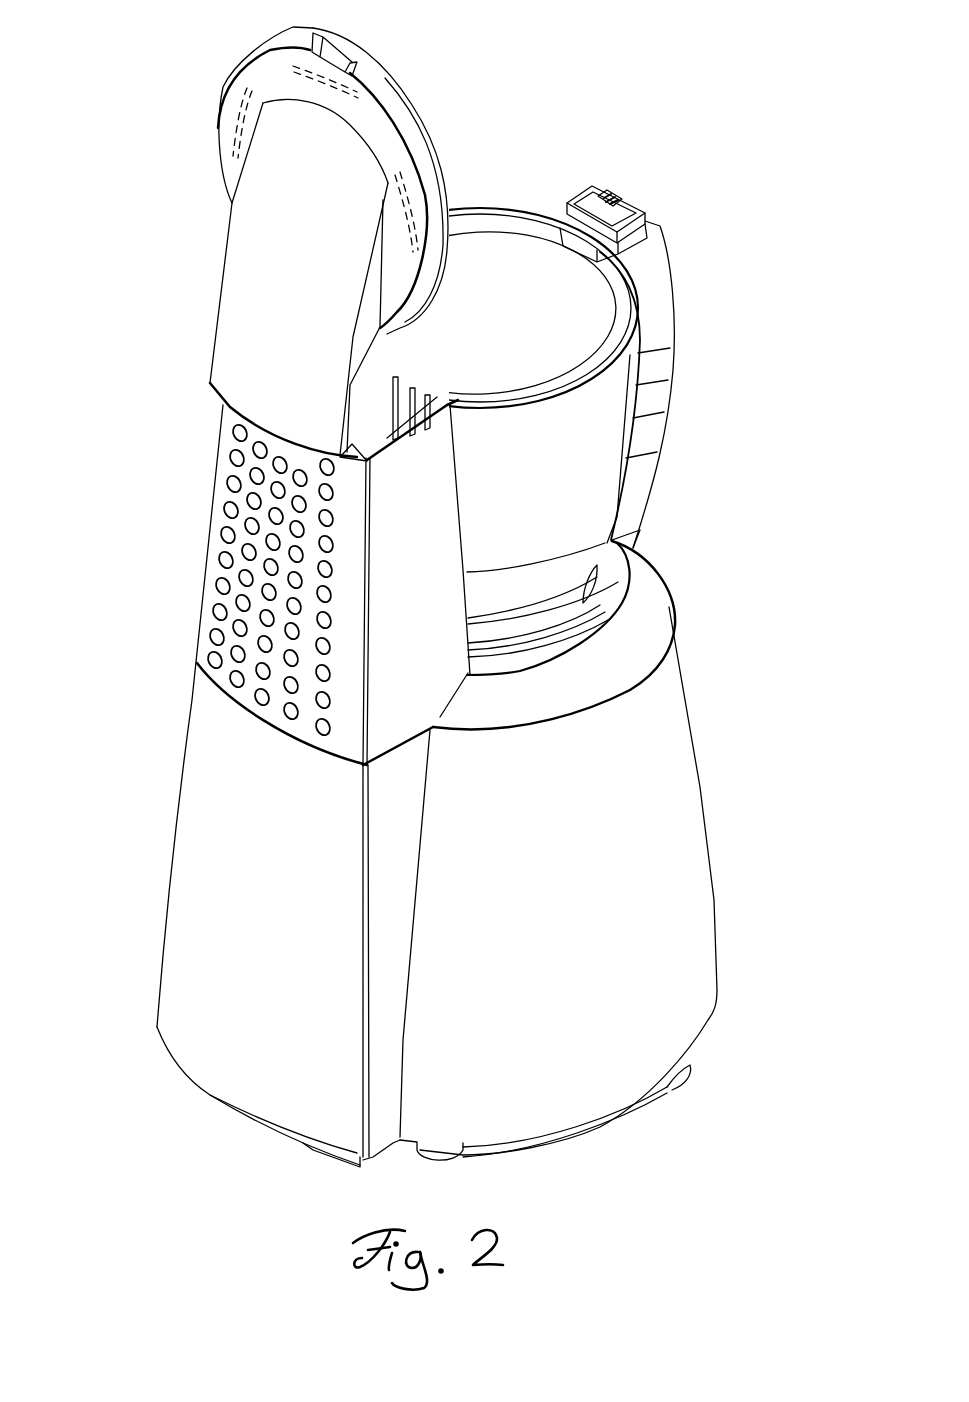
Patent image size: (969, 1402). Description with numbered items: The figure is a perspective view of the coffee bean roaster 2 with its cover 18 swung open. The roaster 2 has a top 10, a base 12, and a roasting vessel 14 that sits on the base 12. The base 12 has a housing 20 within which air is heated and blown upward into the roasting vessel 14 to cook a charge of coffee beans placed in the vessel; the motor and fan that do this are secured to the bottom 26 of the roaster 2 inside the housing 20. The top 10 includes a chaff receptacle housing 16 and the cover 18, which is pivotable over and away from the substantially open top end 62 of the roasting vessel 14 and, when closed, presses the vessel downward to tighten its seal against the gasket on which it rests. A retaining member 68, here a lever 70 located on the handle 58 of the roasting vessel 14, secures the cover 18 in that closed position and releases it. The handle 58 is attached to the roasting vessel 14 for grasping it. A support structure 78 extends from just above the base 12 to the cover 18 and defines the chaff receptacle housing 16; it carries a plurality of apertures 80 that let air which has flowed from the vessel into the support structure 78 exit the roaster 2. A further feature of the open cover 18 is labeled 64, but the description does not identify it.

The coffee bean roaster 2 is at (607, 70).
The top 10 is at (192, 506).
The base 12 is at (158, 808).
The roasting vessel 14 is at (592, 443).
The chaff receptacle housing 16 is at (237, 548).
The cover 18 is at (270, 205).
The housing 20 is at (682, 853).
The bottom 26 is at (553, 1140).
The handle 58 is at (658, 298).
The open top end 62 is at (490, 262).
The lid front wall 64 is at (257, 290).
The retaining member 68 is at (628, 202).
The lever 70 is at (620, 192).
The support structure 78 is at (347, 618).
The apertures 80 is at (233, 485).